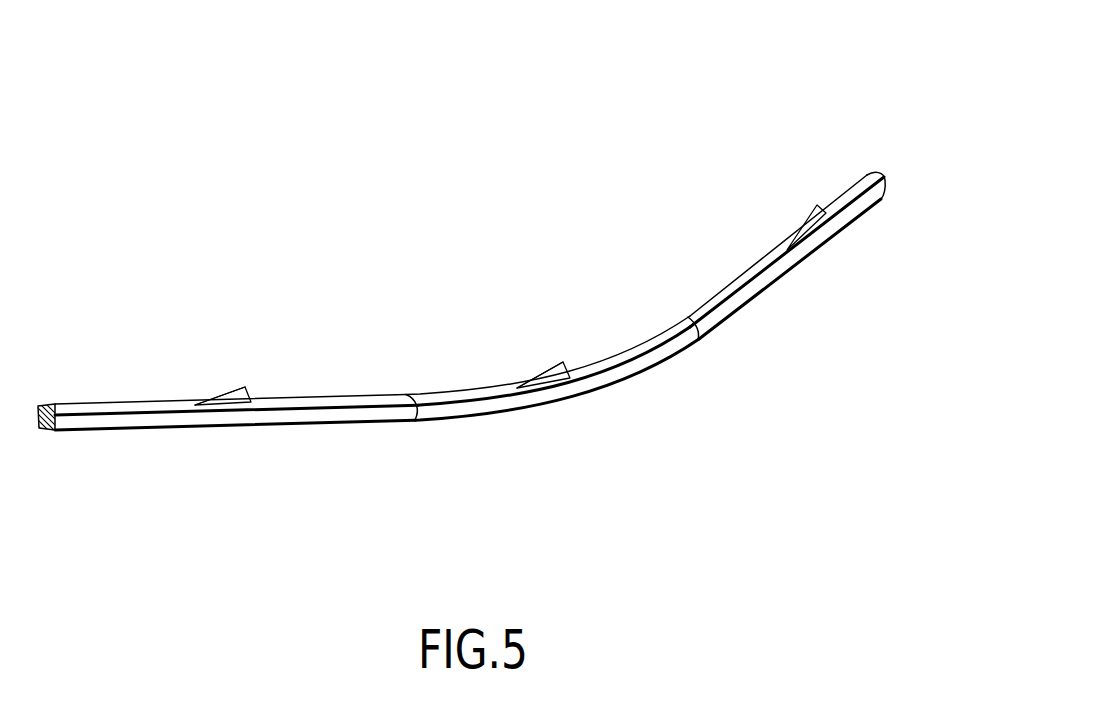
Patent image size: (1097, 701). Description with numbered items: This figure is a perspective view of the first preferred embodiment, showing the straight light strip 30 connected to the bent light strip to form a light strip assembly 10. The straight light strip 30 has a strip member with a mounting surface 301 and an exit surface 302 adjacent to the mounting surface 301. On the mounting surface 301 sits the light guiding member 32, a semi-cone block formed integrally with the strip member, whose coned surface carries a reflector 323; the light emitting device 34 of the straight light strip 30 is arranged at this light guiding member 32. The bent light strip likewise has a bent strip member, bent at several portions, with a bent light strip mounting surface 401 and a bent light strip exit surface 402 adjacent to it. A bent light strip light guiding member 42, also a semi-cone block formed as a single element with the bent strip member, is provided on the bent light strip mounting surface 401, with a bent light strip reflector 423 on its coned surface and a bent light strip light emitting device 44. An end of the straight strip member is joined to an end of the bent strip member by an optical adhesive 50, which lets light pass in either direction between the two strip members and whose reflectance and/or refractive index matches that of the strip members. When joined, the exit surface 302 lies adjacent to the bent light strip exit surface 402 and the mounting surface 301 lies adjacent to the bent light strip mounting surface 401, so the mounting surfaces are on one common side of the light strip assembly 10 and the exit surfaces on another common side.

The light strip assembly 10 is at (729, 145).
The light strip 30 is at (72, 446).
The mounting surface 301 is at (110, 407).
The exit surface 302 is at (128, 423).
The light guiding member 32 is at (228, 426).
The reflector 323 is at (237, 397).
The light emitting device 34 is at (253, 398).
The bent light strip light guiding member 42 is at (558, 408).
The bent light strip mounting surface 401 is at (462, 395).
The bent light strip exit surface 402 is at (482, 410).
The bent light strip light emitting device 44 is at (572, 374).
The bent light strip reflector 423 is at (560, 362).
The optical adhesive 50 is at (424, 421).